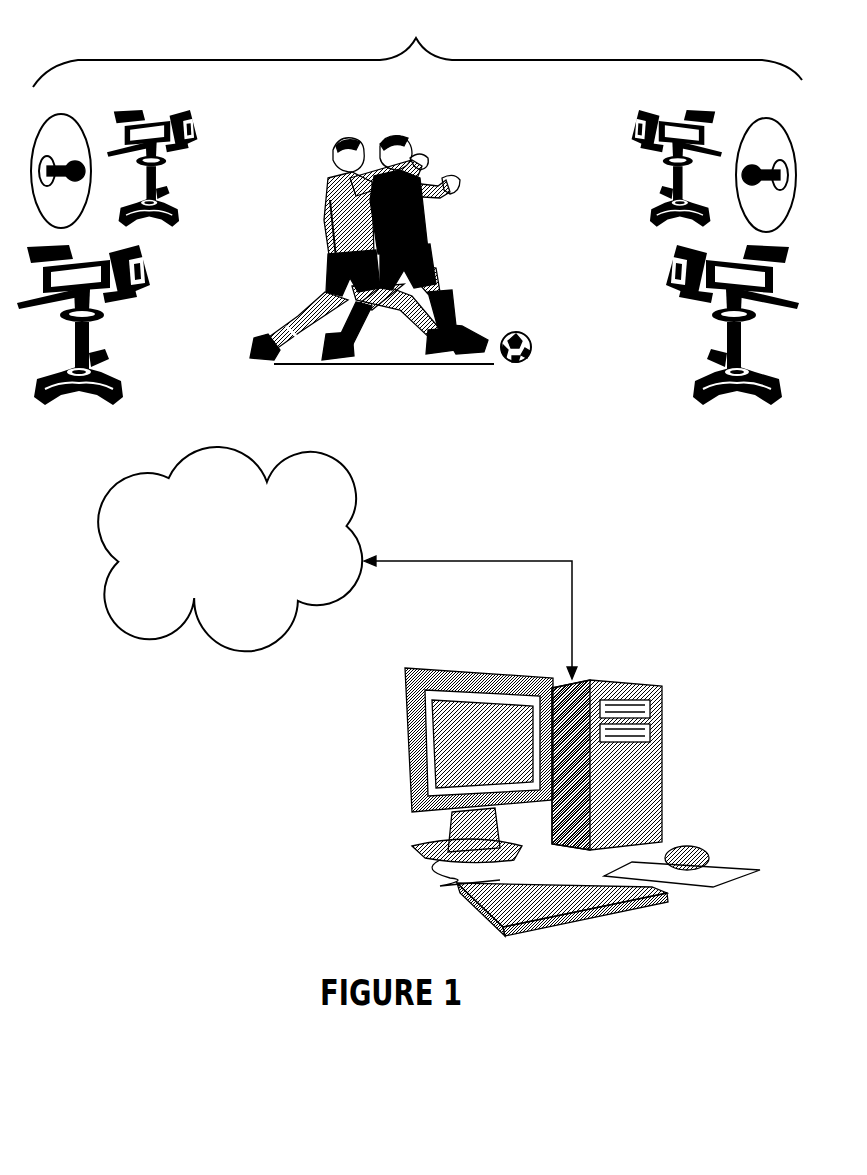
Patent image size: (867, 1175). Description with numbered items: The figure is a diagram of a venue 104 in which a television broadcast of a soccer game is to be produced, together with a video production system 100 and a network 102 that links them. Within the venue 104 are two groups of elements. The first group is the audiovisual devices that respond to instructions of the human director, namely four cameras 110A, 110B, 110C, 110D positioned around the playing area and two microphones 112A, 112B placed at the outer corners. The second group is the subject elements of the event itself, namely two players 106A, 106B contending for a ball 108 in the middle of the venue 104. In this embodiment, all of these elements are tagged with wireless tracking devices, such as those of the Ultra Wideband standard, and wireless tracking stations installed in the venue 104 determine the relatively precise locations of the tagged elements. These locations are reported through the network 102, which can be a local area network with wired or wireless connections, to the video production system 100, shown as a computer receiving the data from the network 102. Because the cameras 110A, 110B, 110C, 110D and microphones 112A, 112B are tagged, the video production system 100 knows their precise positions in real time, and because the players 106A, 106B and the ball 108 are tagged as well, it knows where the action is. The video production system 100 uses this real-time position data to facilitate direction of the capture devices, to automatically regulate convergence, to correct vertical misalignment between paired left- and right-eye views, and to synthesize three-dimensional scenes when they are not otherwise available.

The video production system 100 is at (662, 788).
The network 102 is at (337, 563).
The venue 104 is at (417, 51).
The player 106A is at (330, 180).
The player 106B is at (418, 170).
The ball 108 is at (512, 330).
The camera 110A is at (87, 408).
The camera 110B is at (152, 108).
The camera 110C is at (673, 108).
The camera 110D is at (738, 412).
The microphone 112A is at (62, 114).
The microphone 112B is at (766, 117).